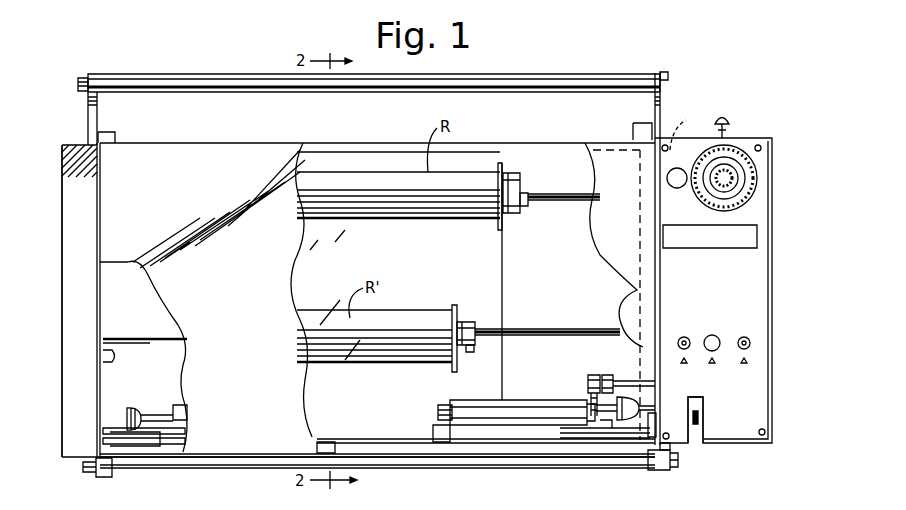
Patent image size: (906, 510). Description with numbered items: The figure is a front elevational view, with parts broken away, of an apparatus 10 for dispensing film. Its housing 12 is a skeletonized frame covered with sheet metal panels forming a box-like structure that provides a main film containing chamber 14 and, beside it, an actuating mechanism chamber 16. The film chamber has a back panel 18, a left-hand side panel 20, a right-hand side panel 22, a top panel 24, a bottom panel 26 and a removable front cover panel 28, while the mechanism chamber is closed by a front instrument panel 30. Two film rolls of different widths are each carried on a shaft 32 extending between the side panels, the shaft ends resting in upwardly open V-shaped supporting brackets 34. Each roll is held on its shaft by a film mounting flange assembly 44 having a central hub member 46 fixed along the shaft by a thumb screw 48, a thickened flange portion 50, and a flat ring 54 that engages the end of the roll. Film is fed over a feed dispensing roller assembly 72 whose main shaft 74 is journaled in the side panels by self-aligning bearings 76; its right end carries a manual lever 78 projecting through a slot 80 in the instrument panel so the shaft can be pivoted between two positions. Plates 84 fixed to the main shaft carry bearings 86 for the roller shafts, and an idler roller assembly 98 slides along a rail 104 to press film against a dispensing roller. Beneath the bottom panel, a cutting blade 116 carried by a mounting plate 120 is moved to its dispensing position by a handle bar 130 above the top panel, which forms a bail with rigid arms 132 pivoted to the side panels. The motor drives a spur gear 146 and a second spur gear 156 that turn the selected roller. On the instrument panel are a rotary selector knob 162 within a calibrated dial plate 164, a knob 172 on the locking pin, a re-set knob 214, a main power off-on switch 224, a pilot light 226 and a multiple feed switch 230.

The apparatus 10 is at (726, 94).
The housing 12 is at (187, 142).
The main film containing chamber 14 is at (532, 157).
The actuating mechanism chamber 16 is at (688, 127).
The back panel 18 is at (581, 278).
The left-hand side panel 20 is at (64, 253).
The right-hand side panel 22 is at (642, 290).
The top panel 24 is at (398, 142).
The bottom panel 26 is at (410, 450).
The removable front cover panel 28 is at (228, 288).
The front instrument panel 30 is at (720, 288).
The shaft 32 is at (573, 192).
The V-shaped supporting bracket 34 is at (108, 358).
The film mounting flange assembly 44 is at (509, 218).
The central hub member 46 is at (525, 203).
The thumb screw 48 is at (470, 352).
The flange portion 50 is at (455, 306).
The flat ring 54 is at (500, 166).
The feed dispensing roller assembly 72 is at (526, 400).
The main shaft 74 is at (120, 426).
The spherical self-aligning bearing 76 is at (668, 448).
The manual lever 78 is at (700, 425).
The slot 80 is at (703, 412).
The plate 84 is at (612, 433).
The bearing 86 is at (127, 415).
The idler roller assembly 98 is at (426, 414).
The rail 104 is at (168, 446).
The cutting blade 116 is at (457, 462).
The mounting plate 120 is at (105, 476).
The handle bar 130 is at (238, 84).
The rigid arm 132 is at (88, 116).
The spur gear 146 is at (598, 372).
The second spur gear 156 is at (606, 374).
The rotary selector knob 162 is at (738, 176).
The dial plate 164 is at (754, 197).
The knob 172 is at (727, 121).
The re-set knob 214 is at (681, 170).
The main power off-on switch 224 is at (750, 341).
The pilot light 226 is at (710, 335).
The multiple feed switch 230 is at (694, 315).